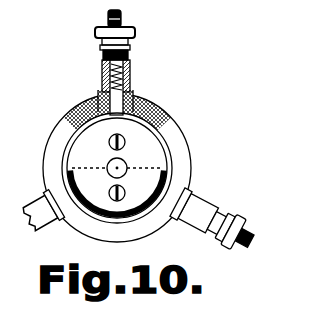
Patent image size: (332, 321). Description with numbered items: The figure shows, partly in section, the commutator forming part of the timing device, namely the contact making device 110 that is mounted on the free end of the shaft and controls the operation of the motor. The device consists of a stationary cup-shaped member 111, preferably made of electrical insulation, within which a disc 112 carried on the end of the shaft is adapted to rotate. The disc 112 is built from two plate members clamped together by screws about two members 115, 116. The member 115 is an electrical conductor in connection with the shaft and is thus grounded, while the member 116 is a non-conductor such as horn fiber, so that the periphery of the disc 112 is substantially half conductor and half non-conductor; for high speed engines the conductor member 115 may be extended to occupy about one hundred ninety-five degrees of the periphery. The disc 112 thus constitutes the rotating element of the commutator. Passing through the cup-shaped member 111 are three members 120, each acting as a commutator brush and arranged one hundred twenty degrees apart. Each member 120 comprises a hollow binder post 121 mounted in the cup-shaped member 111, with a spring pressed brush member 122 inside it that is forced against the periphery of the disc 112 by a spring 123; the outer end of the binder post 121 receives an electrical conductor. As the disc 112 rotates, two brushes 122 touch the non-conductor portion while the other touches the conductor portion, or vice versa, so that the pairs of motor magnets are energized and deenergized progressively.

The contact making device 110 is at (57, 129).
The stationary cup-shaped member 111 is at (152, 112).
The disc 112 is at (172, 152).
The conductor member 115 is at (150, 155).
The non-conductor member 116 is at (170, 168).
The commutator brush member 120 is at (102, 82).
The hollow binder post 121 is at (128, 70).
The brush member 122 is at (113, 105).
The spring 123 is at (102, 63).